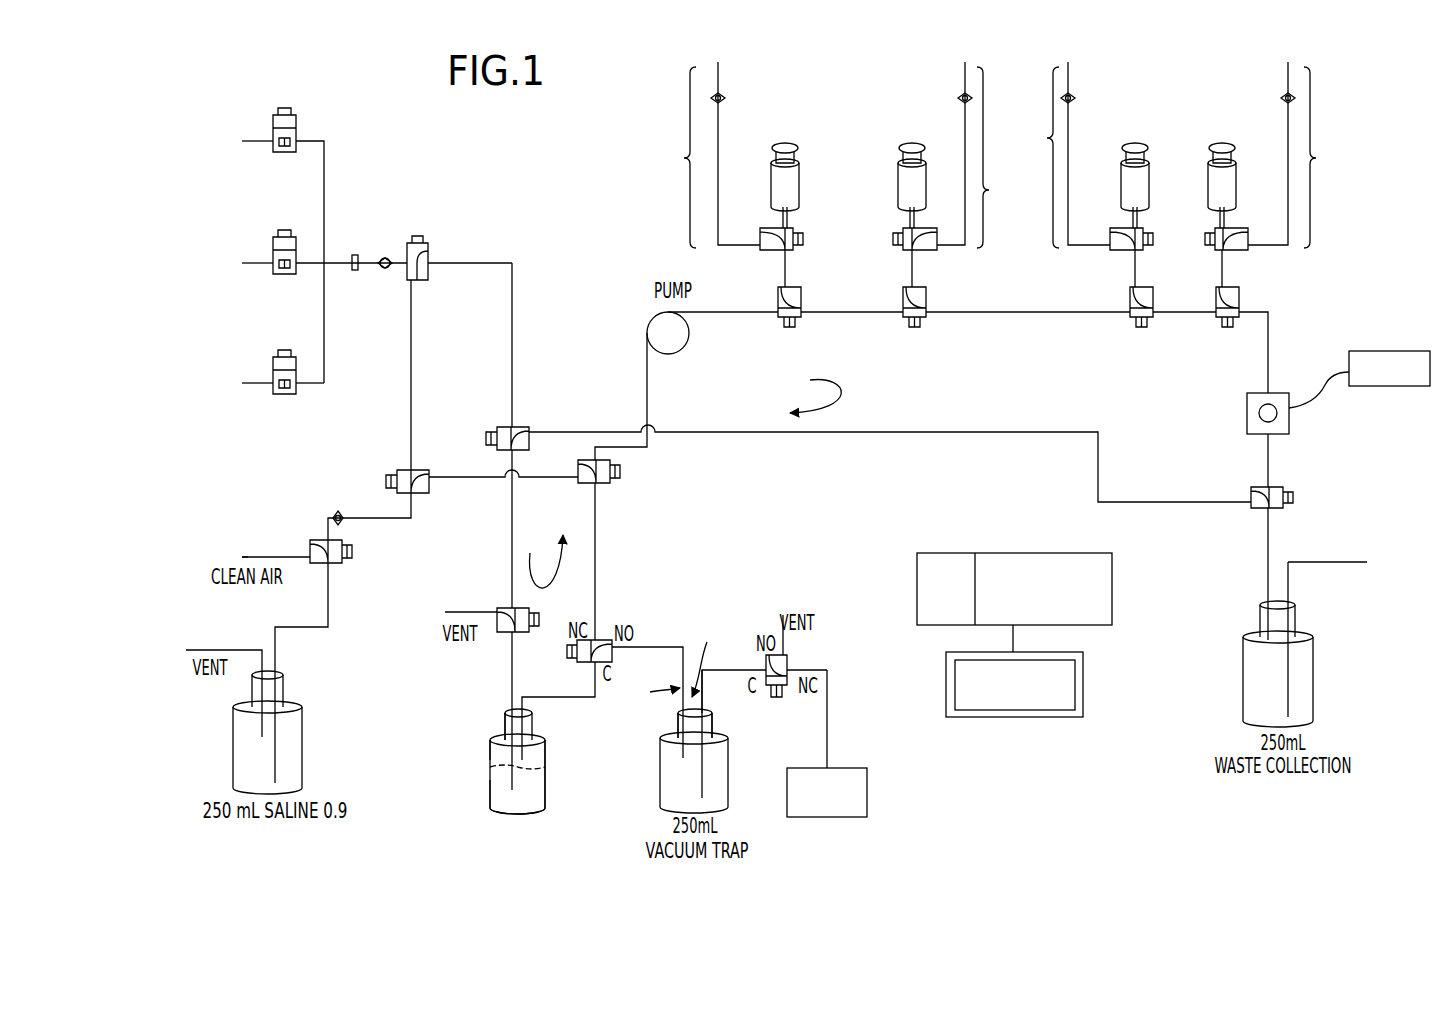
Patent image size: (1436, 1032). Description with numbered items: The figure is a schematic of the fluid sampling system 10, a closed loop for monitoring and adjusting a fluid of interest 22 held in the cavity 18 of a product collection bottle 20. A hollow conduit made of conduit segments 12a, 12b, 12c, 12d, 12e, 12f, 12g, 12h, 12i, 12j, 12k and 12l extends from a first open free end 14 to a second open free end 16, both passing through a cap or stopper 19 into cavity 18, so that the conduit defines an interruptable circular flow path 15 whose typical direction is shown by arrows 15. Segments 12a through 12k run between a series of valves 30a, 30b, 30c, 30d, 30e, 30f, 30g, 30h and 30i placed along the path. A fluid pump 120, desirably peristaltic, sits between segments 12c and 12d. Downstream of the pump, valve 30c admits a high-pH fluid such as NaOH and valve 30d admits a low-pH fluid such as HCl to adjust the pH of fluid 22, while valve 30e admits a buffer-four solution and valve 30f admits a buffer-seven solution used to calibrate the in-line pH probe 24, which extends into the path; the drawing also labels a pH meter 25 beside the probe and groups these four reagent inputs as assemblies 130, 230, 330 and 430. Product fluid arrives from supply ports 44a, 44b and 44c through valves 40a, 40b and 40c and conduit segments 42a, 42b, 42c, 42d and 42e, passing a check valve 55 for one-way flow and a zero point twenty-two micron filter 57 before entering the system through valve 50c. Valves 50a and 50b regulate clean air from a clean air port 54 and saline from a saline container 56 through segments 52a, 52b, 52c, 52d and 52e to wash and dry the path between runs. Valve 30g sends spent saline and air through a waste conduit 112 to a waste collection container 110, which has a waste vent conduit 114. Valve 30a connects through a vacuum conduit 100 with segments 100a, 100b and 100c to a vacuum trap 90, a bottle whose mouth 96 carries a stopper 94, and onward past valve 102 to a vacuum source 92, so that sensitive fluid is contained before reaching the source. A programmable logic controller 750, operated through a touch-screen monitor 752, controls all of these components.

The fluid sampling system 10 is at (593, 73).
The conduit segment 12a is at (600, 700).
The conduit segment 12b is at (596, 570).
The conduit segment 12c is at (648, 405).
The conduit segment 12d is at (738, 318).
The conduit segment 12e is at (875, 318).
The conduit segment 12f is at (1028, 318).
The conduit segment 12g is at (1183, 312).
The conduit segment 12h is at (1268, 335).
The conduit segment 12i is at (1268, 462).
The conduit segment 12j is at (930, 436).
The conduit segment 12k is at (511, 555).
The conduit segment 12l is at (511, 685).
The first open free end 14 is at (545, 782).
The flow path 15 is at (686, 484).
The second open free end 16 is at (505, 750).
The cavity 18 is at (500, 790).
The cap or stopper 19 is at (511, 715).
The product collection bottle 20 is at (490, 805).
The fluid of interest 22 is at (545, 752).
The pH probe 24 is at (1289, 423).
The pH meter 25 is at (1385, 350).
The valve 30a is at (597, 640).
The valve 30b is at (598, 483).
The valve 30c is at (800, 322).
The valve 30d is at (926, 322).
The valve 30e is at (1136, 328).
The valve 30f is at (1240, 292).
The valve 30g is at (1255, 508).
The valve 30h is at (499, 427).
The valve 30i is at (500, 632).
The valve 40a is at (297, 128).
The valve 40b is at (274, 248).
The valve 40c is at (274, 370).
The conduit segment 42a is at (253, 143).
The conduit segment 42b is at (253, 265).
The conduit segment 42c is at (253, 385).
The fluid line 42d is at (337, 265).
The conduit segment 42e is at (513, 352).
The supply port 44a is at (240, 141).
The supply port 44b is at (240, 263).
The supply port 44c is at (240, 383).
The valve 50a is at (332, 563).
The valve 50b is at (415, 495).
The valve 50c is at (425, 243).
The conduit segment 52a is at (290, 555).
The conduit 52b is at (318, 628).
The conduit segment 52c is at (378, 520).
The conduit segment 52d is at (470, 478).
The conduit segment 52e is at (410, 410).
The clean air port 54 is at (240, 557).
The check valve 55 is at (388, 257).
The saline container 56 is at (302, 757).
The filter 57 is at (355, 254).
The vacuum trap 90 is at (728, 775).
The vacuum source 92 is at (840, 768).
The stopper 94 is at (708, 655).
The mouth 96 is at (712, 716).
The vacuum conduit 100 is at (645, 692).
The vacuum conduit segment 100a is at (683, 640).
The vacuum conduit segment 100b is at (755, 640).
The vacuum conduit segment 100c is at (827, 712).
The valve 102 is at (776, 697).
The waste collection container 110 is at (1313, 680).
The waste conduit 112 is at (1268, 583).
The waste vent conduit 114 is at (1290, 590).
The fluid pump 120 is at (660, 330).
The NaOH reagent module 130 is at (725, 170).
The HCl reagent module 230 is at (960, 170).
The buffer 4 module 330 is at (1076, 170).
The buffer 7 module 430 is at (1285, 170).
The programmable logic controller 750 is at (1112, 620).
The touch-screen monitor 752 is at (1083, 700).